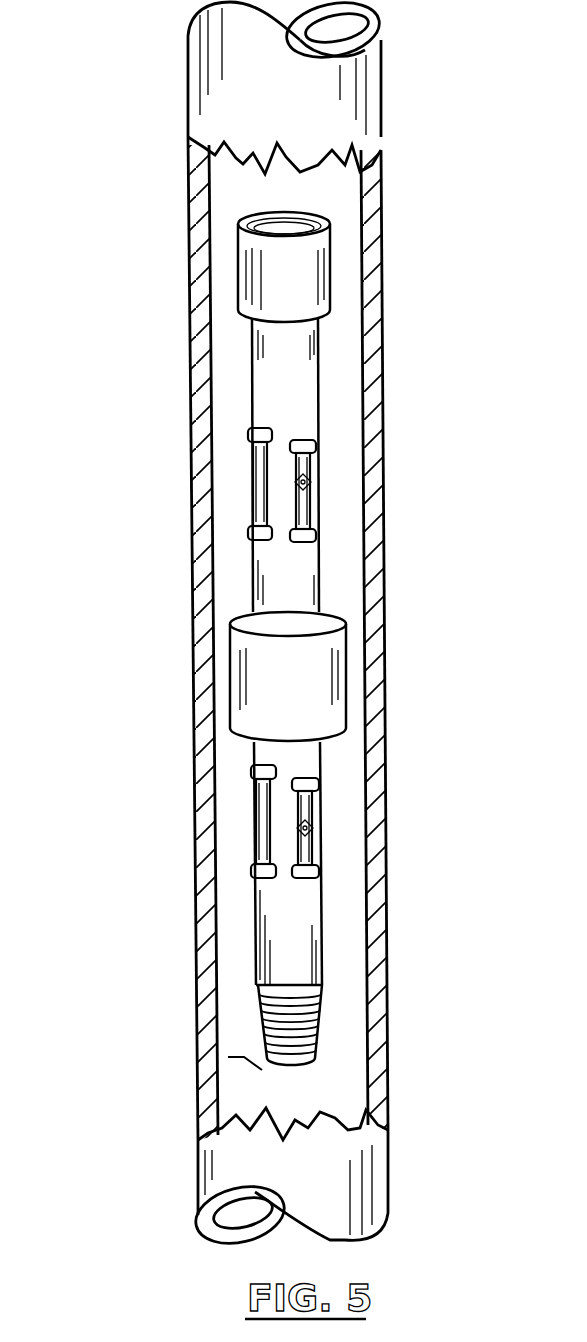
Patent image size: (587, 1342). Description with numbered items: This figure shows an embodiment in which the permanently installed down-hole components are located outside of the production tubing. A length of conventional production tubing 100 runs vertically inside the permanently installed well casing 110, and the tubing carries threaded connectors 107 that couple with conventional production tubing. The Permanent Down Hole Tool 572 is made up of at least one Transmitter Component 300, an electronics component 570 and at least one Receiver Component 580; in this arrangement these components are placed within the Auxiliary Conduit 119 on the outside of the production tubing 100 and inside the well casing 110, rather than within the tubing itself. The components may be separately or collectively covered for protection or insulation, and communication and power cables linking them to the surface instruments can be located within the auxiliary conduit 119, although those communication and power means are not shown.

The well casing 110 is at (190, 432).
The conventional production tubing 100 is at (322, 388).
The Permanent Down Hole Tool 572 is at (240, 268).
The electronics component 570 is at (340, 733).
The transmitter component 300 is at (312, 482).
The receiver component 580 is at (260, 813).
The threaded connectors 107 is at (318, 1020).
The auxiliary conduit 119 is at (262, 1070).